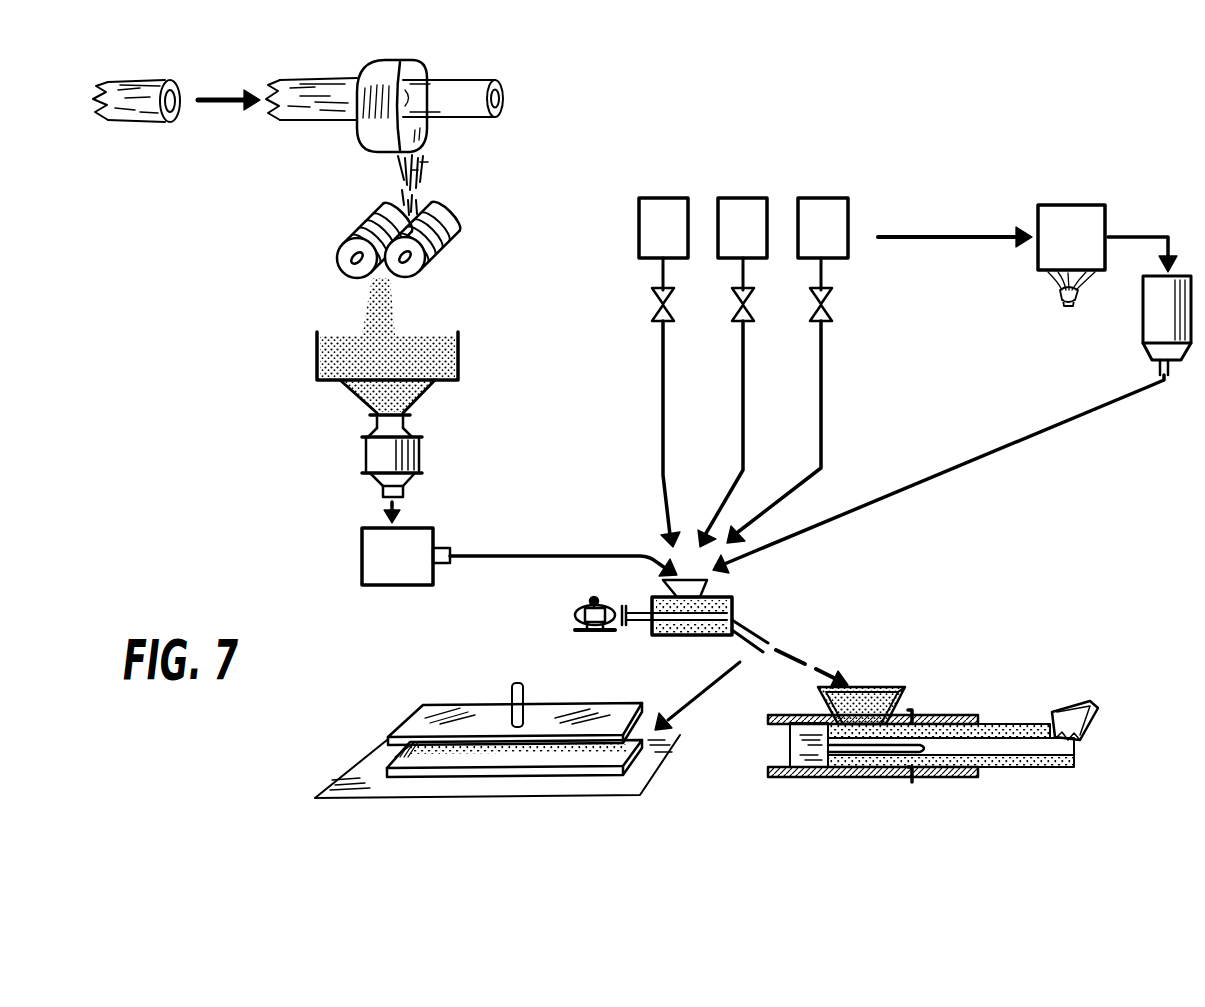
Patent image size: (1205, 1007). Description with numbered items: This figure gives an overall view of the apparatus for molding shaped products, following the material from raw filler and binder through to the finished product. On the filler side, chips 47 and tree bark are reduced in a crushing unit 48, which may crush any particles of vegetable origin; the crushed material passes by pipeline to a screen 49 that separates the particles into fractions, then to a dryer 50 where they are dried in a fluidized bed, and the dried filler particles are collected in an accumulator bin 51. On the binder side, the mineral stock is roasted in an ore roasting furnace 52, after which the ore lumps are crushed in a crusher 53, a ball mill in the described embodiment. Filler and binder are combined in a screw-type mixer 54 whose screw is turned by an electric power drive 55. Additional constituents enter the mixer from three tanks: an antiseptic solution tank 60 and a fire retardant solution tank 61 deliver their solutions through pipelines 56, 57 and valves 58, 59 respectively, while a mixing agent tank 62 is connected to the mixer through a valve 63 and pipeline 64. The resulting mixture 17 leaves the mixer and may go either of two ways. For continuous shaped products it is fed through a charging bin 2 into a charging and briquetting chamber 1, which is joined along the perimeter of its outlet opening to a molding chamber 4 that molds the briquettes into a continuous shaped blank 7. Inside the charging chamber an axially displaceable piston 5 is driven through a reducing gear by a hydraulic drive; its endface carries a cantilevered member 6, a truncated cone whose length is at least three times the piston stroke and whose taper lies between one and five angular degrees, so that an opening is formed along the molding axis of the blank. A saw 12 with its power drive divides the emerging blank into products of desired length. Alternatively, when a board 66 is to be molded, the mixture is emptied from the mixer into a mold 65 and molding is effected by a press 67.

The charging and briquetting chamber 1 is at (880, 778).
The charging bin 2 is at (896, 705).
The molding chamber 4 is at (952, 726).
The piston 5 is at (800, 746).
The cantilevered member 6 is at (853, 778).
The continuous shaped blank 7 is at (1020, 770).
The saw 12 is at (1076, 712).
The mixture 17 is at (866, 700).
The chips 47 is at (428, 183).
The crushing unit 48 is at (345, 246).
The screen 49 is at (318, 357).
The dryer 50 is at (376, 456).
The accumulator bin 51 is at (376, 557).
The ore roasting furnace 52 is at (1066, 212).
The crusher 53 is at (1158, 324).
The screw-type mixer 54 is at (718, 600).
The electric power drive 55 is at (580, 610).
The pipeline 56 is at (662, 413).
The pipeline 57 is at (742, 413).
The valve 58 is at (655, 308).
The valve 59 is at (736, 308).
The antiseptic solution tank 60 is at (661, 205).
The fire retardant solution tank 61 is at (741, 205).
The mixing agent tank 62 is at (821, 205).
The valve 63 is at (814, 308).
The pipeline 64 is at (818, 382).
The mold 65 is at (392, 777).
The board 66 is at (408, 756).
The press 67 is at (468, 717).